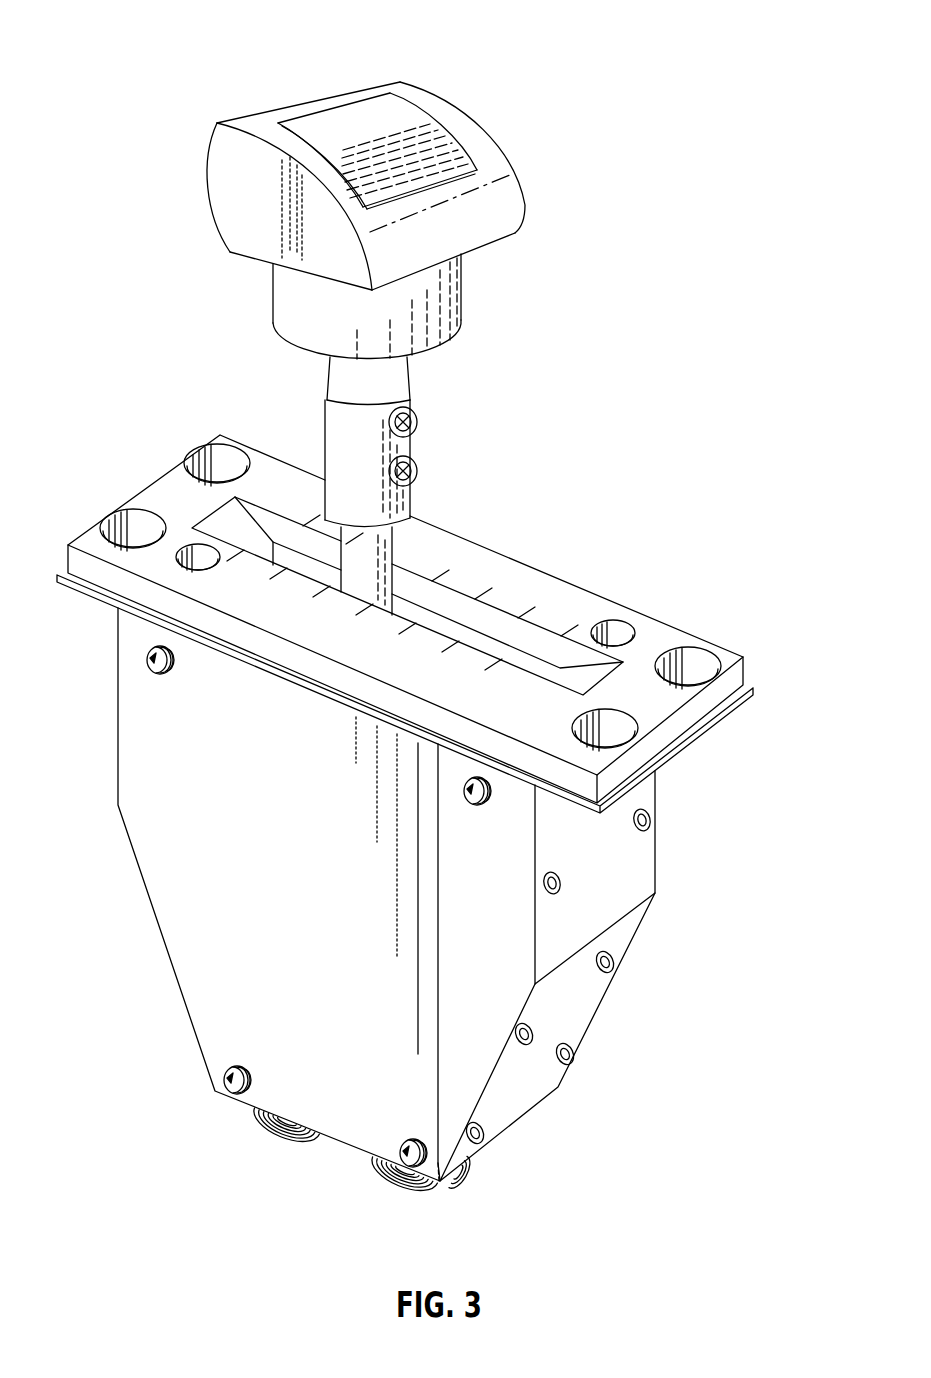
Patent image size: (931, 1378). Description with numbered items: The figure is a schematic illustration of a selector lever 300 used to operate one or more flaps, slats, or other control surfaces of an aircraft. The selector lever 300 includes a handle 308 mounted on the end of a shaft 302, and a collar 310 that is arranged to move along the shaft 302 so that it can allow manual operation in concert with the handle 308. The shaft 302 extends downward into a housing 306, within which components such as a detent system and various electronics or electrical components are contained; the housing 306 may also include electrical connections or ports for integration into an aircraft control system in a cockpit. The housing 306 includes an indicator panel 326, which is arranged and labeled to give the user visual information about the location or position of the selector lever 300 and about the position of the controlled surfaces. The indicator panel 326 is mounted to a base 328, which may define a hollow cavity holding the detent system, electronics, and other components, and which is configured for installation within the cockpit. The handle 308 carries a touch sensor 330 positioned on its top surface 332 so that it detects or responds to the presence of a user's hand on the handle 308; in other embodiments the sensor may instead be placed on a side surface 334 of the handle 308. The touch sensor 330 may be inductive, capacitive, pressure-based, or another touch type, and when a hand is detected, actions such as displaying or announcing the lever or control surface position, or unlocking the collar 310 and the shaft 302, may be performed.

The selector lever 300 is at (436, 621).
The shaft 302 is at (374, 566).
The housing 306 is at (436, 899).
The handle 308 is at (371, 160).
The collar 310 is at (316, 311).
The indicator panel 326 is at (92, 546).
The base 328 is at (138, 808).
The touch sensor 330 is at (358, 130).
The top surface 332 is at (262, 134).
The side surface 334 is at (237, 192).